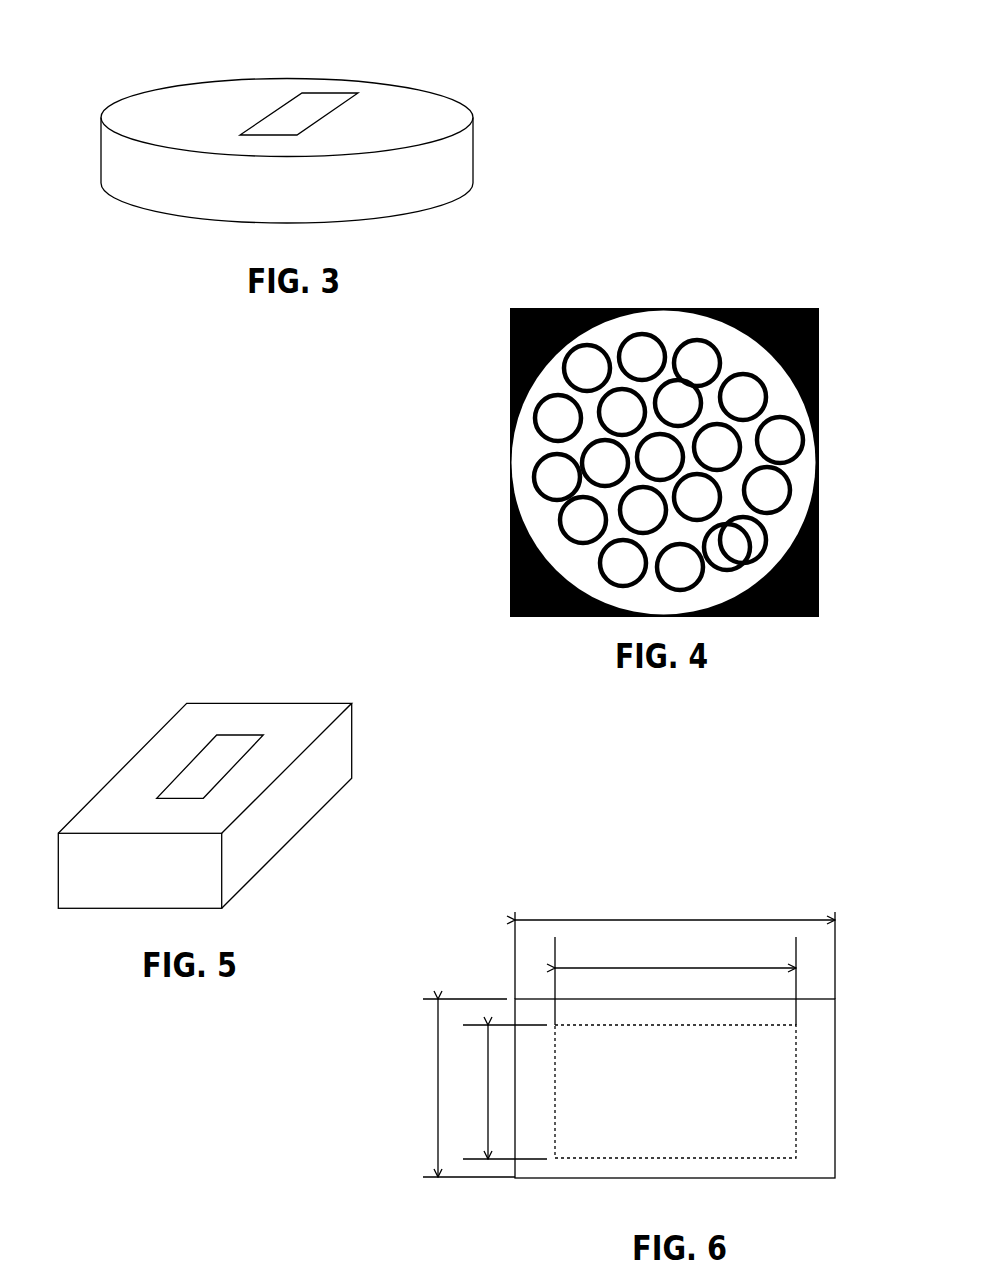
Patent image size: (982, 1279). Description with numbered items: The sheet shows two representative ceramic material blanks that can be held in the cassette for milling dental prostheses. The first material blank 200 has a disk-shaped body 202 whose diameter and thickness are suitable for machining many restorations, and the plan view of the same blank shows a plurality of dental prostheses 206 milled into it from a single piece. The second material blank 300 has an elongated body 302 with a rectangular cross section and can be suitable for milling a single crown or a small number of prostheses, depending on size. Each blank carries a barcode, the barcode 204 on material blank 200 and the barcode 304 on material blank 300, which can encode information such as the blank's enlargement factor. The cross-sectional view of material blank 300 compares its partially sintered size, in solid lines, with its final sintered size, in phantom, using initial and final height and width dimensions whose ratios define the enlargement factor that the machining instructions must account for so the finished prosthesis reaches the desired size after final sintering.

In FIG. 3, the material blank 200 is at (180, 37).
In FIG. 4, the material blank 200 is at (672, 280).
In FIG. 3, the disk-shaped body 202 is at (432, 117).
In FIG. 3, the barcode 204 is at (315, 102).
In FIG. 4, the dental prostheses 206 is at (560, 418).
In FIG. 5, the material blank 300 is at (123, 673).
In FIG. 6, the material blank 300 is at (592, 876).
In FIG. 5, the elongated body 302 is at (303, 727).
In FIG. 5, the barcode 304 is at (232, 745).